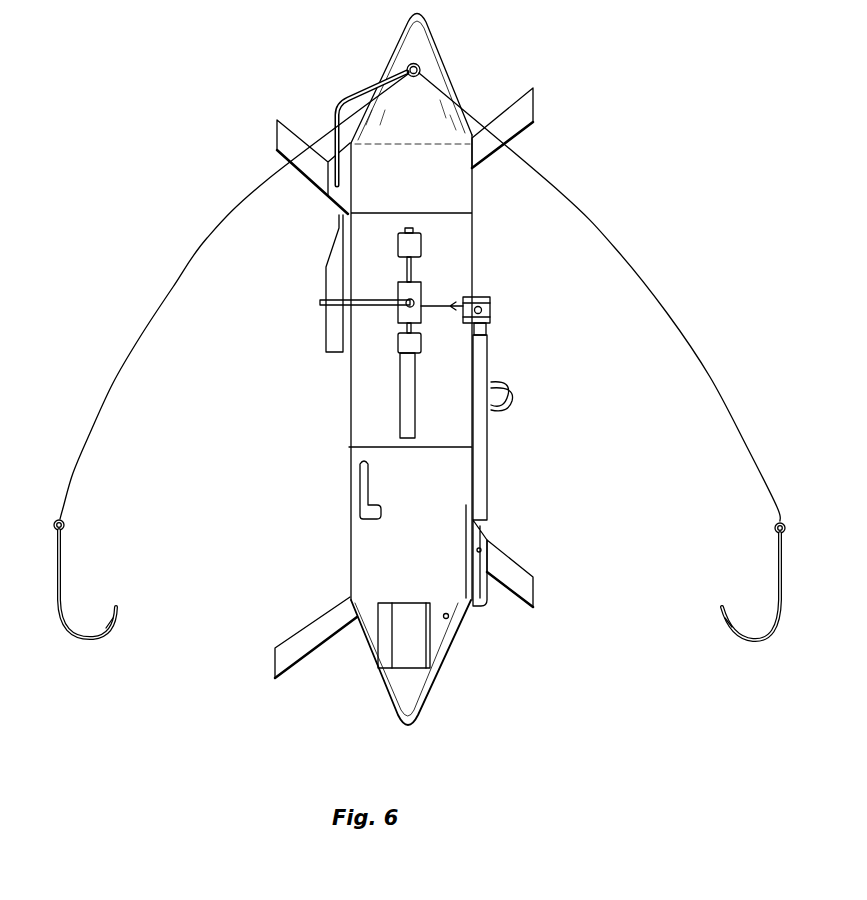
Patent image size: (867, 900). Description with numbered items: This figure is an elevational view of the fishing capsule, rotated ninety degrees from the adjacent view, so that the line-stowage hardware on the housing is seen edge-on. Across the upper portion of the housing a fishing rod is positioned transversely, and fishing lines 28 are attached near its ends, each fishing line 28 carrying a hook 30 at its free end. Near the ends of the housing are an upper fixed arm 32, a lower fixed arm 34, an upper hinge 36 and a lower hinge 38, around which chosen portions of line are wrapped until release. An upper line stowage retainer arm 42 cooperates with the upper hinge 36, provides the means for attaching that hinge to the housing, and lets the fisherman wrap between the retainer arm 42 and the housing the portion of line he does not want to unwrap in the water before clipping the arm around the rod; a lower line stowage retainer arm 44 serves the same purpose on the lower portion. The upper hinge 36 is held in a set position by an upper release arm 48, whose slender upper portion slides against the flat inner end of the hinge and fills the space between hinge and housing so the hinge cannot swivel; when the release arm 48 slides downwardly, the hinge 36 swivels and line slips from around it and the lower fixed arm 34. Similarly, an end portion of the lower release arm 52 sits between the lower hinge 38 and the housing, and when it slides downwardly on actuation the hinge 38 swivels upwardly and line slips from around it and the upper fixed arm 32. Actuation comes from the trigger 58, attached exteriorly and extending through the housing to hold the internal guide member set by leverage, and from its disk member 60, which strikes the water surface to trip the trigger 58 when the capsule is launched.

The fishing lines 28 is at (207, 238).
The hooks 30 is at (83, 638).
The upper fixed arm 32 is at (530, 100).
The lower fixed arm 34 is at (280, 650).
The upper hinge 36 is at (277, 135).
The lower hinge 38 is at (527, 578).
The upper line stowage retainer arm 42 is at (346, 100).
The lower line stowage retainer arm 44 is at (480, 615).
The upper release arm 48 is at (328, 333).
The lower release arm 52 is at (488, 447).
The trigger 58 is at (507, 382).
The disk member 60 is at (510, 396).